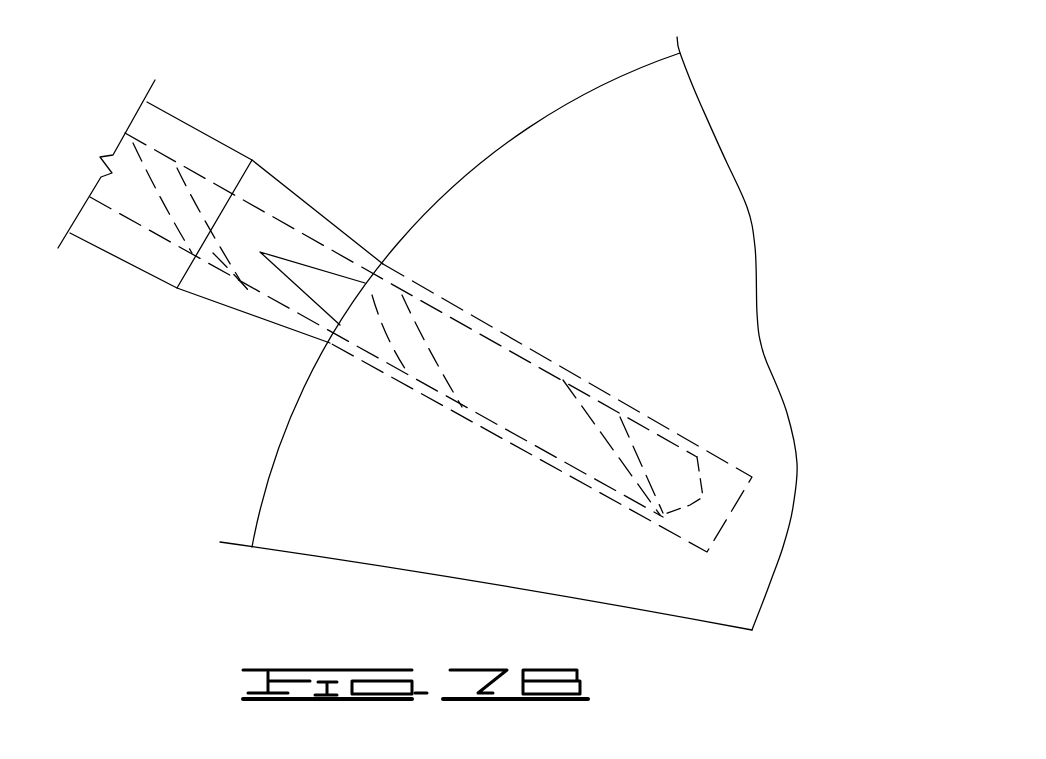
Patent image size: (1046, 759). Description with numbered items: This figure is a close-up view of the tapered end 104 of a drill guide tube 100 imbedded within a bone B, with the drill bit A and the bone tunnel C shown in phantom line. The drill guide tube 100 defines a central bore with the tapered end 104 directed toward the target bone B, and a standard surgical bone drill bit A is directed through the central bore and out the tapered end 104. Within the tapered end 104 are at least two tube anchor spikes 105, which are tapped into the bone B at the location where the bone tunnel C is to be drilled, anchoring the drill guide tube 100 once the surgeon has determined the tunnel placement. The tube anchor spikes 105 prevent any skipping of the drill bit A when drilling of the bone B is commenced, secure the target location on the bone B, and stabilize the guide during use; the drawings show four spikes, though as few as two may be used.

The drill guide tube 100 is at (140, 270).
The tapered end 104 is at (280, 183).
The tube anchor spikes 105 is at (385, 270).
The bone drill bit A is at (513, 437).
The bone B is at (552, 108).
The bone tunnel C is at (707, 527).